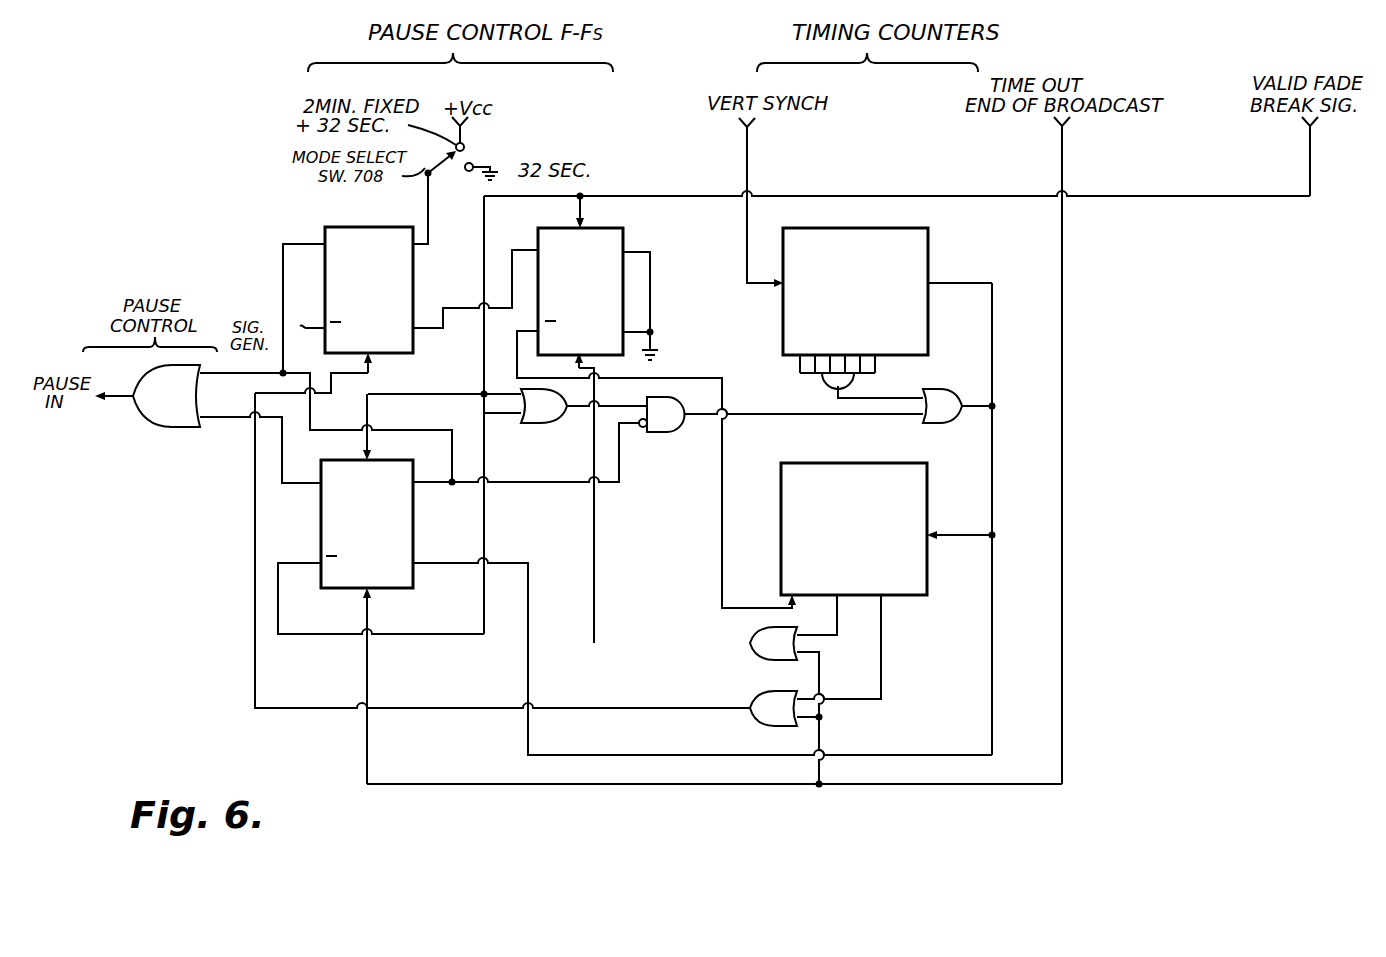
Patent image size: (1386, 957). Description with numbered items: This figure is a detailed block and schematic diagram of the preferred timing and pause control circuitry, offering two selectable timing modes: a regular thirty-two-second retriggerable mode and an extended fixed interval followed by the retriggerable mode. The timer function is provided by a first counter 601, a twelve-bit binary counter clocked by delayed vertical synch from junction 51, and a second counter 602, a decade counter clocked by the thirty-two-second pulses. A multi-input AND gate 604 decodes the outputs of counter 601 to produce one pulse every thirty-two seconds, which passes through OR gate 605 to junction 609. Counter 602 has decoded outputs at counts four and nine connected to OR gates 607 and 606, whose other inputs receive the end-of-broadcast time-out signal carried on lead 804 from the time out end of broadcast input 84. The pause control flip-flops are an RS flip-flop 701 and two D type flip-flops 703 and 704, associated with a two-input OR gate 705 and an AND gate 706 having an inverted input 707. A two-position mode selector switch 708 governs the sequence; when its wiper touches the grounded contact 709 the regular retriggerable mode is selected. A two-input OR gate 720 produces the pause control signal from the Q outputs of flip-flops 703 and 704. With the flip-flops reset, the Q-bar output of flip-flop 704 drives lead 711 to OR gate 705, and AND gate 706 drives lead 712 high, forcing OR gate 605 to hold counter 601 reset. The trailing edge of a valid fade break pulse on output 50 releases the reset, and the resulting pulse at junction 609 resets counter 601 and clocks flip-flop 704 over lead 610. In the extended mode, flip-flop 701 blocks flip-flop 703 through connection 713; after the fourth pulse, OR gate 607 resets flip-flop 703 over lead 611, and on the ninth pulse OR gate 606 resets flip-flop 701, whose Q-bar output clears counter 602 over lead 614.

The output 50 is at (1310, 150).
The junction 51 is at (747, 152).
The time out end of broadcast input 84 is at (1062, 155).
The first counter 601 is at (900, 228).
The second counter 602 is at (895, 463).
The multi-input AND gate 604 is at (824, 386).
The OR gate 605 is at (940, 388).
The OR gate 606 is at (752, 656).
The OR gate 607 is at (750, 722).
The junction 609 is at (998, 402).
The lead 610 is at (882, 755).
The lead 611 is at (280, 705).
The lead 614 is at (722, 558).
The RS flip-flop 701 is at (600, 228).
The D type flip-flop 703 is at (343, 227).
The D type flip-flop 704 is at (393, 460).
The two-input OR gate 705 is at (538, 426).
The AND gate 706 is at (680, 432).
The inverted input 707 is at (630, 428).
The mode selector switch 708 is at (435, 147).
The grounded contact 709 is at (472, 164).
The lead 711 is at (486, 525).
The lead 712 is at (795, 416).
The connection 713 is at (448, 305).
The two-input OR gate 720 is at (165, 427).
The lead 804 is at (878, 787).